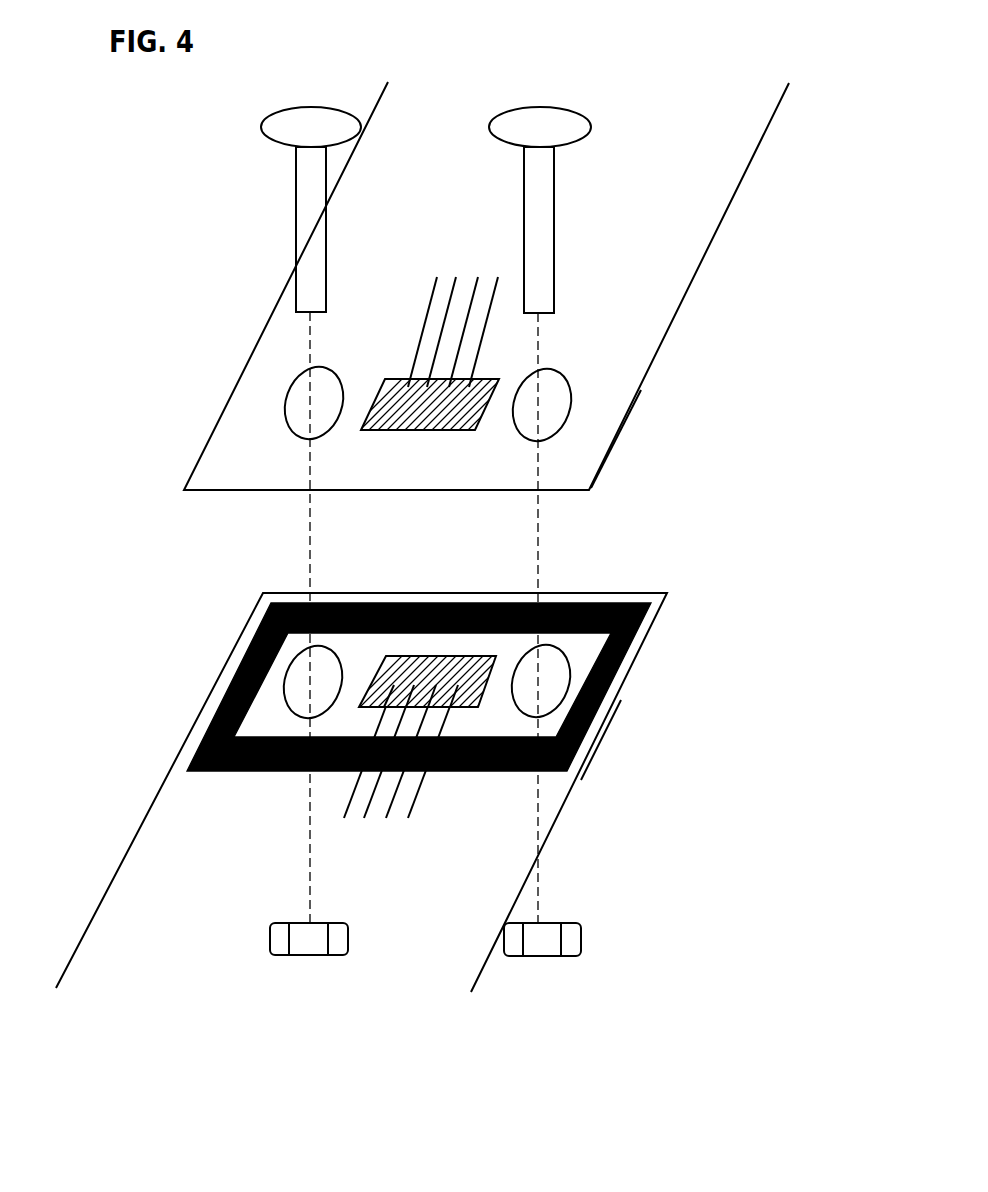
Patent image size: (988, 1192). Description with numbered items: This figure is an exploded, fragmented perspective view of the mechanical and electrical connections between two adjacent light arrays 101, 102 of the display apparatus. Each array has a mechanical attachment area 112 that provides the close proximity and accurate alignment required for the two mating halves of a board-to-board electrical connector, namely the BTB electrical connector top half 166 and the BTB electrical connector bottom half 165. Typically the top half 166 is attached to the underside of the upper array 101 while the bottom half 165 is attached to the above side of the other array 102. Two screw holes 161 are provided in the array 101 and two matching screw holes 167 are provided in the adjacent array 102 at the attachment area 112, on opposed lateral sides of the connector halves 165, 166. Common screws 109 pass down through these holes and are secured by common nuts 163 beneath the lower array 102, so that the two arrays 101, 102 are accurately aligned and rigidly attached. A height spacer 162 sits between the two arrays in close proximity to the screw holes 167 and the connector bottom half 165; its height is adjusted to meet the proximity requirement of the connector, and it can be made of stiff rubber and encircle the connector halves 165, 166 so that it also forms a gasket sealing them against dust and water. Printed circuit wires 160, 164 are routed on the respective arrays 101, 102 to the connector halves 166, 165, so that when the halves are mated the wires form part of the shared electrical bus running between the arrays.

The light array 101 is at (712, 253).
The light array 102 is at (113, 865).
The screw 109 is at (285, 210).
The mechanical attachment area 112 is at (637, 398).
The printed circuit wires 160 is at (463, 263).
The screw holes 161 is at (285, 393).
The spacer 162 is at (238, 677).
The nut 163 is at (252, 937).
The printed circuit wires 164 is at (383, 828).
The BTB electrical connector bottom half 165 is at (480, 654).
The BTB electrical connector top half 166 is at (415, 433).
The screw holes 167 is at (290, 658).